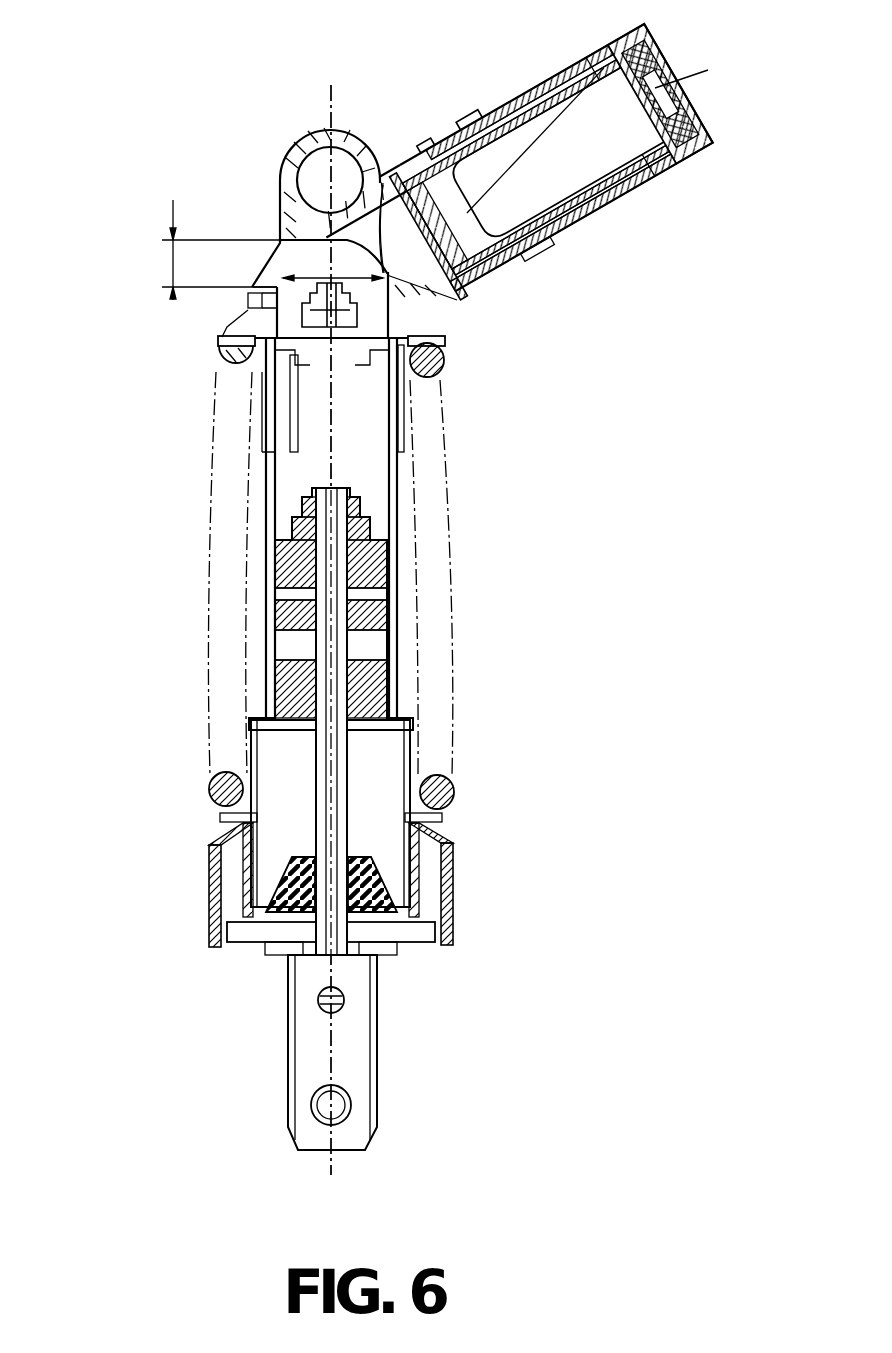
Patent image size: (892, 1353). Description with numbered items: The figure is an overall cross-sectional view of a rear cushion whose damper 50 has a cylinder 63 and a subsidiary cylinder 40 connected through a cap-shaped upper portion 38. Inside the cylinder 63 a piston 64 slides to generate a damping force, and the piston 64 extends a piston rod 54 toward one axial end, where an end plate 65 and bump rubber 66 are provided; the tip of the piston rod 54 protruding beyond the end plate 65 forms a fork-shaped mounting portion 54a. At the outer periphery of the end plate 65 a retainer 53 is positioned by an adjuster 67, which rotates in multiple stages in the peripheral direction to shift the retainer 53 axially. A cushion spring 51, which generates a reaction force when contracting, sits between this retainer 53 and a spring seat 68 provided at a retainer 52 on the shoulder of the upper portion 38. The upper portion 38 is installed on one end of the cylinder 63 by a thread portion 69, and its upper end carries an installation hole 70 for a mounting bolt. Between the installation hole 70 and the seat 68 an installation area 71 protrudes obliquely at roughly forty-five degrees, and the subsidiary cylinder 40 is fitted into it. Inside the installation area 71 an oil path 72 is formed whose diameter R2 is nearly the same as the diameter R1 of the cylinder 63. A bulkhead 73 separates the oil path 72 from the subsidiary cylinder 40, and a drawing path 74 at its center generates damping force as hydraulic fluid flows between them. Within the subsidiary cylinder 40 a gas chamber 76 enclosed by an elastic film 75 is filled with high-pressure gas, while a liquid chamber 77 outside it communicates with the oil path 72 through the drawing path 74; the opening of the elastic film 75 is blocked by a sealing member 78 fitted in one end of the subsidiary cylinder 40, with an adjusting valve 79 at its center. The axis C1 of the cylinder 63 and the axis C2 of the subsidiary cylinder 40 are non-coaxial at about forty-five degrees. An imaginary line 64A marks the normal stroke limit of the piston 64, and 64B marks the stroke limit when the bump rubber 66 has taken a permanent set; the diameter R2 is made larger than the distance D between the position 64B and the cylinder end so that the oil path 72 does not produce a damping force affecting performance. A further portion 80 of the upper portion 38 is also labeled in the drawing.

The upper portion 38 is at (278, 168).
The subsidiary cylinder 40 is at (633, 201).
The damper 50 is at (420, 470).
The cushion spring 51 is at (218, 590).
The retainer 52 is at (223, 333).
The retainer 53 is at (443, 812).
The piston rod 54 is at (350, 765).
The fork-shaped mounting portion 54a is at (357, 1062).
The cylinder 63 is at (293, 466).
The piston 64 is at (383, 560).
The imaginary line 64A is at (262, 376).
The stroke limit position 64B is at (247, 306).
The end plate 65 is at (245, 935).
The bump rubber 66 is at (273, 888).
The adjuster 67 is at (457, 903).
The spring seat 68 is at (453, 333).
The thread portion 69 is at (400, 411).
The installation hole 70 is at (317, 163).
The installation area 71 is at (430, 153).
The oil path 72 is at (378, 142).
The bulkhead 73 is at (510, 288).
The drawing path 74 is at (577, 233).
The elastic film 75 is at (531, 97).
The gas chamber 76 is at (573, 123).
The liquid chamber 77 is at (463, 120).
The sealing member 78 is at (700, 120).
The adjusting valve 79 is at (673, 67).
The bracket portion 80 is at (277, 213).
The axis of the cylinder C1 is at (327, 602).
The axis of the subsidiary cylinder C2 is at (704, 65).
The distance D is at (221, 223).
The diameter of the cylinder R1 is at (333, 260).
The diameter of the oil path R2 is at (399, 230).